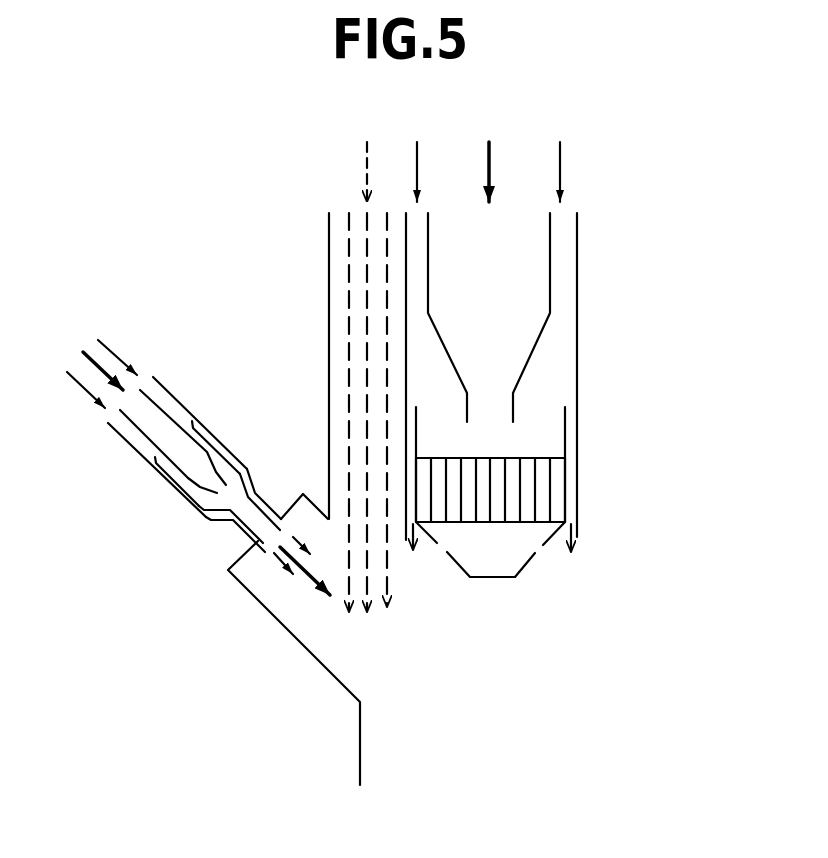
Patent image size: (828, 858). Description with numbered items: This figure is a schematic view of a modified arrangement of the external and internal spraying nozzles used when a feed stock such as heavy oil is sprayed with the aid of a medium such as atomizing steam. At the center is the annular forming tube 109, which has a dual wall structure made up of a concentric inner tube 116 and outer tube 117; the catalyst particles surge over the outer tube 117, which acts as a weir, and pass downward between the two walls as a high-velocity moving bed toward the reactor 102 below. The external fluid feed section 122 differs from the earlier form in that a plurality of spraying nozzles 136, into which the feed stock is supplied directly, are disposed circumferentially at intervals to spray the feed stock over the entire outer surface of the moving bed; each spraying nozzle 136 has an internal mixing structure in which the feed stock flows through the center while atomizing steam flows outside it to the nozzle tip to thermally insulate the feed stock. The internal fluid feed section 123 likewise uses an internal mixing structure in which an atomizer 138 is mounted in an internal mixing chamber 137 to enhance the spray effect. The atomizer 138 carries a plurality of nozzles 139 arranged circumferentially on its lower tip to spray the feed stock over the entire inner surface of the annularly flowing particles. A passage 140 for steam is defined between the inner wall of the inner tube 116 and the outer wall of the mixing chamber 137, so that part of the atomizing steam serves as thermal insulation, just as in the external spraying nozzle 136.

The reactor 102 is at (360, 755).
The annular forming tube 109 is at (327, 247).
The inner tube 116 is at (406, 370).
The outer tube 117 is at (328, 316).
The external fluid feed section 122 is at (212, 538).
The internal fluid feed section 123 is at (543, 590).
The spraying nozzle 136 is at (133, 452).
The internal mixing chamber 137 is at (515, 445).
The atomizer 138 is at (550, 499).
The nozzle 139 is at (544, 552).
The passage for steam 140 is at (568, 465).